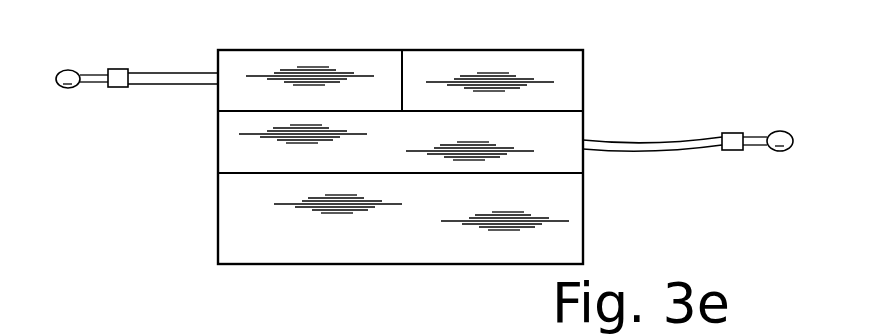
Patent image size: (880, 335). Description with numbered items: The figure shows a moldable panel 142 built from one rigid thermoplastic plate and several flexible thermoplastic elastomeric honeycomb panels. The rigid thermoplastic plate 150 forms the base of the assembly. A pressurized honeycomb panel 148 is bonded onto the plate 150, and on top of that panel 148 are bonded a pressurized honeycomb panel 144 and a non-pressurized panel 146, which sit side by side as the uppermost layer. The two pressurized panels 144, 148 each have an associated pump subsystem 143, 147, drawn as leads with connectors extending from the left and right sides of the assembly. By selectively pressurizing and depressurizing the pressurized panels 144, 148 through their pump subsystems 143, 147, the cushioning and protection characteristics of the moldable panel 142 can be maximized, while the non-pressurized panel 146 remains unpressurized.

The moldable panel 142 is at (182, 264).
The pump subsystem 143 is at (127, 59).
The pressurized honeycomb panel 144 is at (226, 97).
The non-pressurized panel 146 is at (560, 94).
The pump subsystem 147 is at (736, 112).
The pressurized honeycomb panel 148 is at (228, 157).
The rigid thermoplastic plate 150 is at (567, 203).